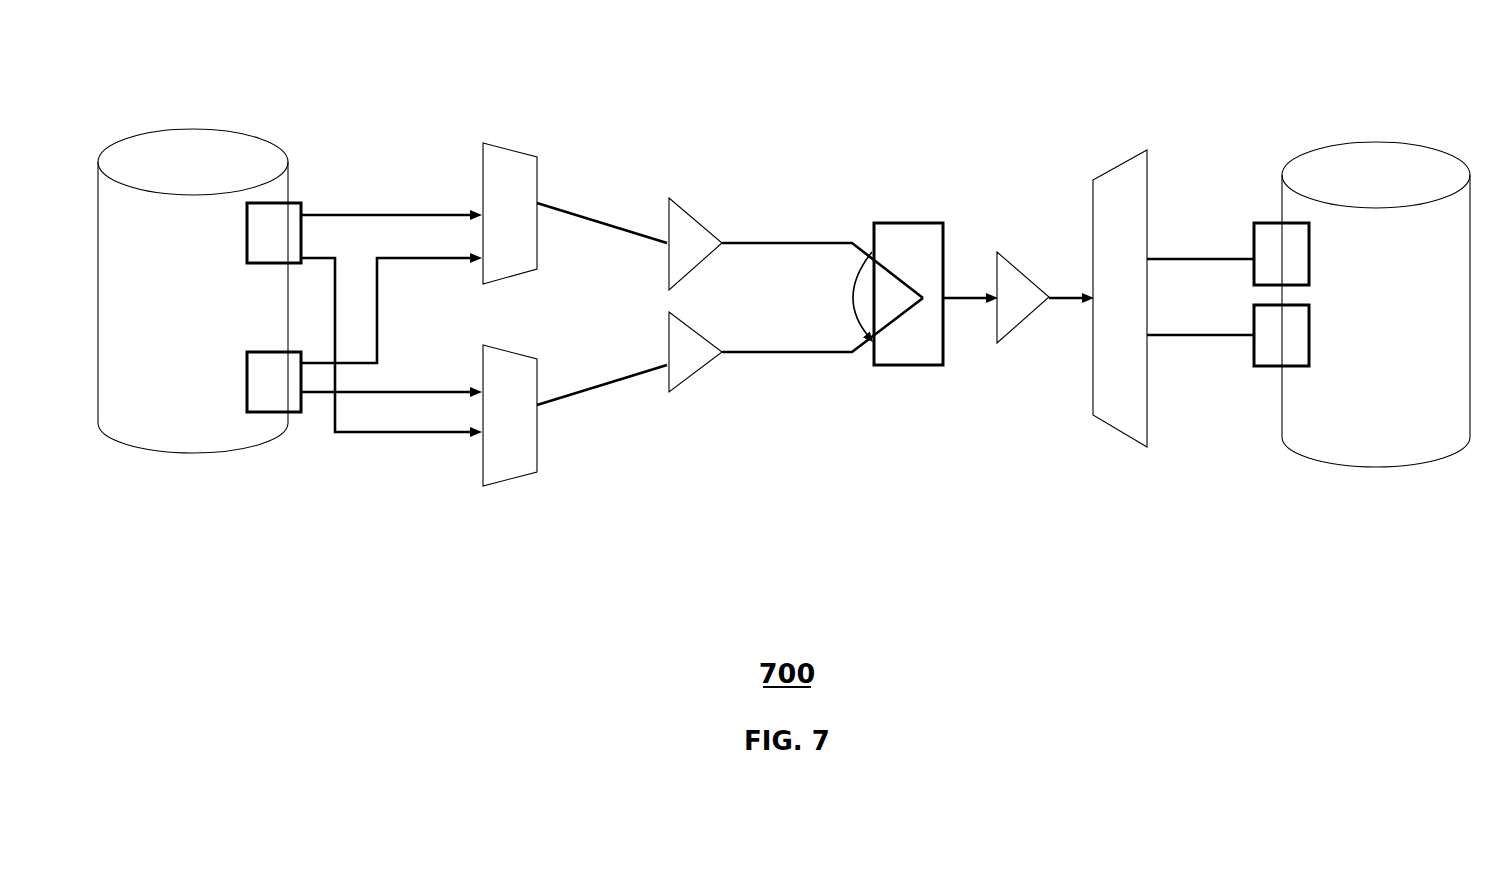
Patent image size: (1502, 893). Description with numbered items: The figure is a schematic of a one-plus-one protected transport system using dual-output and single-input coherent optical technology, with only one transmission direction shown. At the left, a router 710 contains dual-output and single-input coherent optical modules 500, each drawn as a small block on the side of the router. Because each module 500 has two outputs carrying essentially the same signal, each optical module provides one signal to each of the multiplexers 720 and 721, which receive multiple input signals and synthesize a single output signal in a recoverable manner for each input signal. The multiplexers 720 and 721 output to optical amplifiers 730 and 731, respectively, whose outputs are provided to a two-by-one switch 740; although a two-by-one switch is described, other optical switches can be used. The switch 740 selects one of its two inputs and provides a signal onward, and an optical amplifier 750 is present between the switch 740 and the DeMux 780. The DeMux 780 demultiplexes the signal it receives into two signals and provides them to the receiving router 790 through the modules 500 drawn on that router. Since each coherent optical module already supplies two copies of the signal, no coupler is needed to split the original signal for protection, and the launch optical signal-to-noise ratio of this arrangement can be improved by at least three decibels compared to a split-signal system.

The dual-output and single-input coherent optical module 500 is at (302, 203).
The router 710 is at (165, 447).
The multiplexer 720 is at (507, 480).
The multiplexer 721 is at (508, 275).
The optical amplifier 730 is at (672, 393).
The optical amplifier 731 is at (692, 275).
The two-by-one switch 740 is at (905, 368).
The optical amplifier 750 is at (1012, 330).
The DeMux 780 is at (1122, 430).
The router 790 is at (1375, 465).